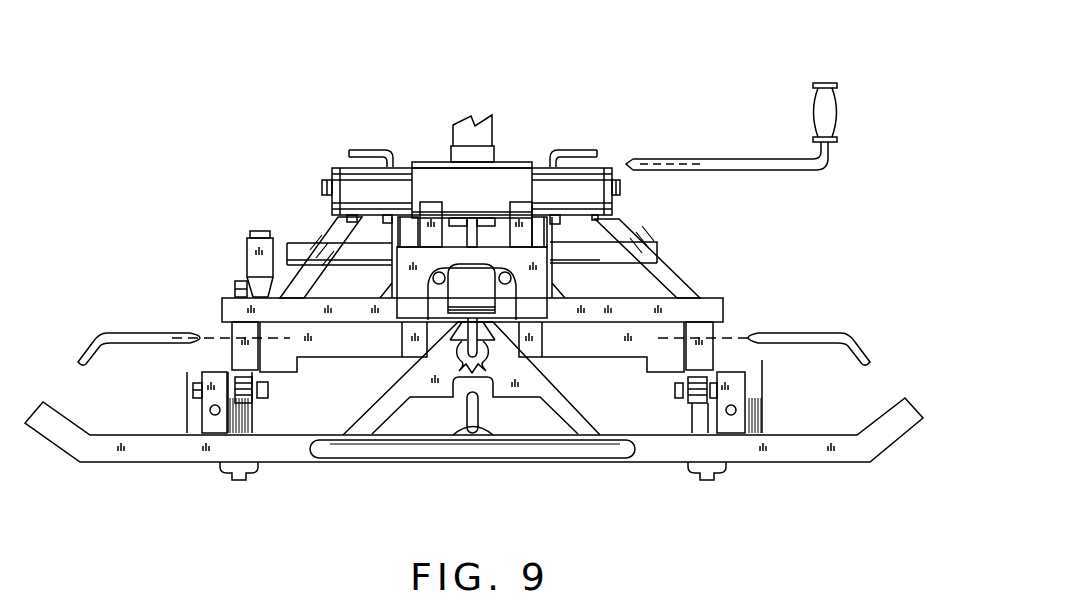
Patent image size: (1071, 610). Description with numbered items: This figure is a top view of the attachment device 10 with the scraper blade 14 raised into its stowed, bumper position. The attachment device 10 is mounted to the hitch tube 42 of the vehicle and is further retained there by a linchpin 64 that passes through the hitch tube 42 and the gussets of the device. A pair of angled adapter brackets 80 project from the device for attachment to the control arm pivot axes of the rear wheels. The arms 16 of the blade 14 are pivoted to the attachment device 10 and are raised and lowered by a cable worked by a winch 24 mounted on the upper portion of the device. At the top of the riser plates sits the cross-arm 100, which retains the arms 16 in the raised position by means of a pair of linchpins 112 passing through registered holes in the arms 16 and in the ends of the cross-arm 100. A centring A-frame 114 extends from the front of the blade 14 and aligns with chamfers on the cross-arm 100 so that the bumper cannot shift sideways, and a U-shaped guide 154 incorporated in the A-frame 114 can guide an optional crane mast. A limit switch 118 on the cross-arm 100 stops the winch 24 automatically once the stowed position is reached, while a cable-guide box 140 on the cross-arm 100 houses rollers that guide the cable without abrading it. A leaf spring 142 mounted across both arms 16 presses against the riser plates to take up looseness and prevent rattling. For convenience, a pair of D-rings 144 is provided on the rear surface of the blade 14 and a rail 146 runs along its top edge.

The attachment device 10 is at (732, 224).
The scraper blade 14 is at (810, 463).
The arms 16 is at (677, 280).
The winch 24 is at (430, 163).
The hitch tube 42 is at (493, 132).
The linchpin 64 is at (770, 159).
The angled adapter brackets 80 is at (367, 149).
The cross-arm 100 is at (723, 307).
The linchpins 112 is at (150, 332).
The centring A-frame 114 is at (575, 419).
The limit switch 118 is at (245, 255).
The cable-guide box 140 is at (500, 257).
The leaf spring 142 is at (366, 251).
The D-rings 144 is at (239, 478).
The rail 146 is at (565, 451).
The U-shaped guide 154 is at (468, 386).